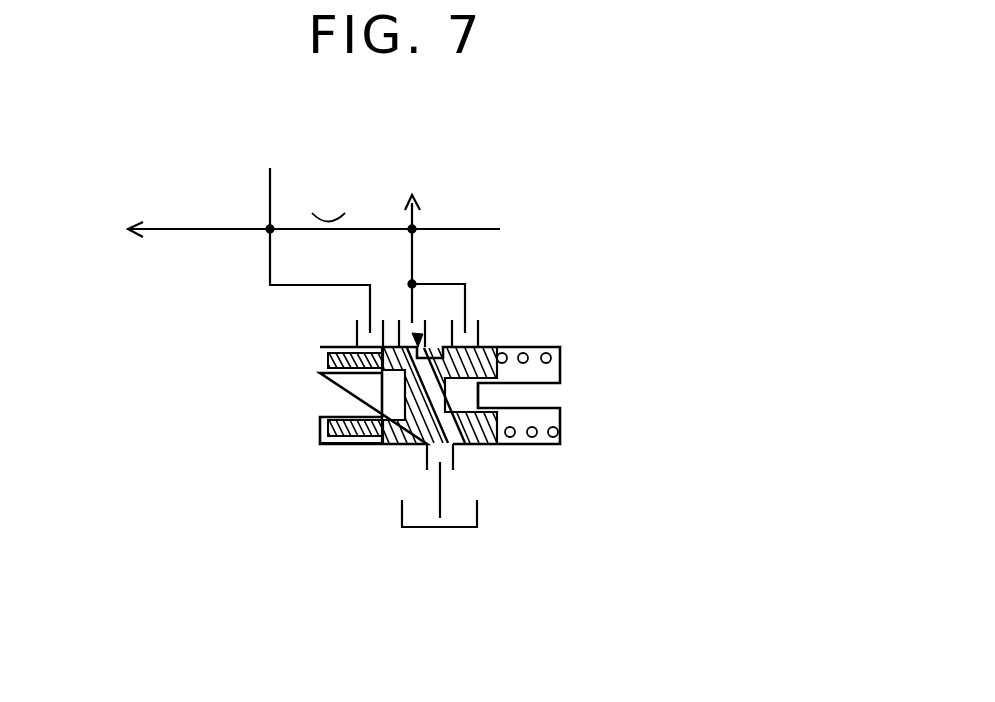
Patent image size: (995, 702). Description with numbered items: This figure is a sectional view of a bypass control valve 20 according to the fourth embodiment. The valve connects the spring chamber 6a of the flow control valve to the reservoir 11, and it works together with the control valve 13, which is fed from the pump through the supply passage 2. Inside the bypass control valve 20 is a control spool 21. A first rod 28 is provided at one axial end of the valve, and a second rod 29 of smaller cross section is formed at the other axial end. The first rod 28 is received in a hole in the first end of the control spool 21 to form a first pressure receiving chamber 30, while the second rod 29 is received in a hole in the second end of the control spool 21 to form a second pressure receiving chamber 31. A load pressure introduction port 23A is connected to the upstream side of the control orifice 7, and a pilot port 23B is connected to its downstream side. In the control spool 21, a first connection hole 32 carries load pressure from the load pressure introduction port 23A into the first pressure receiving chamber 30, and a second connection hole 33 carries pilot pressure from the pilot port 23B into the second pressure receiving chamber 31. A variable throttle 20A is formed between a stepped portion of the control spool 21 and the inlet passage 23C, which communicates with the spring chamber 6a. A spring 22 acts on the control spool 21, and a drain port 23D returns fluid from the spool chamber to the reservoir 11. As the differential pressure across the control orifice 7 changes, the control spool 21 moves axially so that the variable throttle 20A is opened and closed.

The supply passage 2 is at (212, 228).
The control valve 13 is at (289, 232).
The control orifice 7 is at (347, 243).
The inlet passage 23C is at (417, 345).
The spring chamber 6a is at (429, 242).
The variable throttle 20A is at (420, 343).
The pilot port 23B is at (478, 328).
The bypass control valve 20 is at (507, 327).
The load pressure introduction port 23A is at (373, 338).
The second connection hole 33 is at (495, 374).
The first connection hole 32 is at (325, 358).
The spring 22 is at (553, 359).
The first rod 28 is at (338, 397).
The second rod 29 is at (547, 397).
The first pressure receiving chamber 30 is at (357, 435).
The second pressure receiving chamber 31 is at (465, 400).
The control spool 21 is at (400, 435).
The reservoir 11 is at (477, 517).
The drain port 23D is at (428, 462).